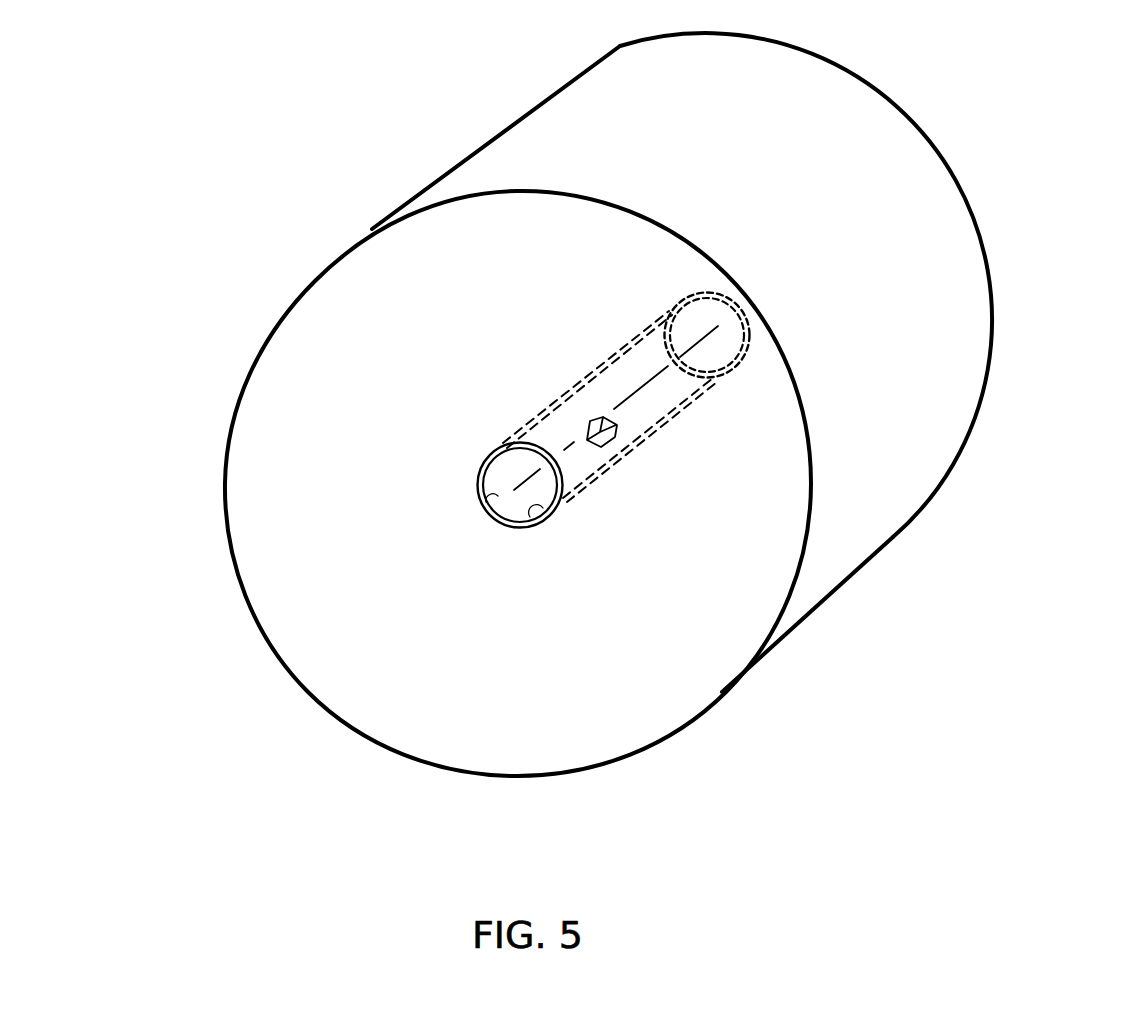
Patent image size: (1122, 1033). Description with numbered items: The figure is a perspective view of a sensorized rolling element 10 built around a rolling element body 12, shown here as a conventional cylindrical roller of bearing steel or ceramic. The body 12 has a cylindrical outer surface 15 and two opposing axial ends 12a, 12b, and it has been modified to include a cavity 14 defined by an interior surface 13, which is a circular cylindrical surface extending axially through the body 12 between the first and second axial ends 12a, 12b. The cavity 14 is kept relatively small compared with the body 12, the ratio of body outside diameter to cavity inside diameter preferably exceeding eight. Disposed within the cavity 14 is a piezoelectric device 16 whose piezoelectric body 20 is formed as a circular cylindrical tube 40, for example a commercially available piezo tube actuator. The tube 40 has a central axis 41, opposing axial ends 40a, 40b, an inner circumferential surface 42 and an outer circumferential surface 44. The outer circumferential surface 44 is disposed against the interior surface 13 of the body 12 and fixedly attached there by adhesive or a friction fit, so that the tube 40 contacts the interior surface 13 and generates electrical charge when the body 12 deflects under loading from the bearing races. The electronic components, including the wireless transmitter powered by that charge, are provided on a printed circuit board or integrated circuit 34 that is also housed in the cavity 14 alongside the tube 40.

The sensorized rolling element 10 is at (283, 82).
The rolling element body 12 is at (616, 404).
The first axial end 12a is at (285, 591).
The second axial end 12b is at (940, 148).
The interior surface 13 is at (512, 527).
The cavity 14 is at (478, 484).
The cylindrical outer surface 15 is at (948, 298).
The piezoelectric device 16 is at (486, 523).
The piezoelectric body 20 is at (590, 500).
The printed circuit board or integrated circuit 34 is at (618, 447).
The circular cylindrical tube 40 is at (607, 441).
The first axial end of piezoelectric tube 40a is at (474, 526).
The second axial end of piezoelectric tube 40b is at (746, 298).
The central axis 41 is at (704, 334).
The inner circumferential surface 42 is at (483, 508).
The outer circumferential surface 44 is at (480, 470).